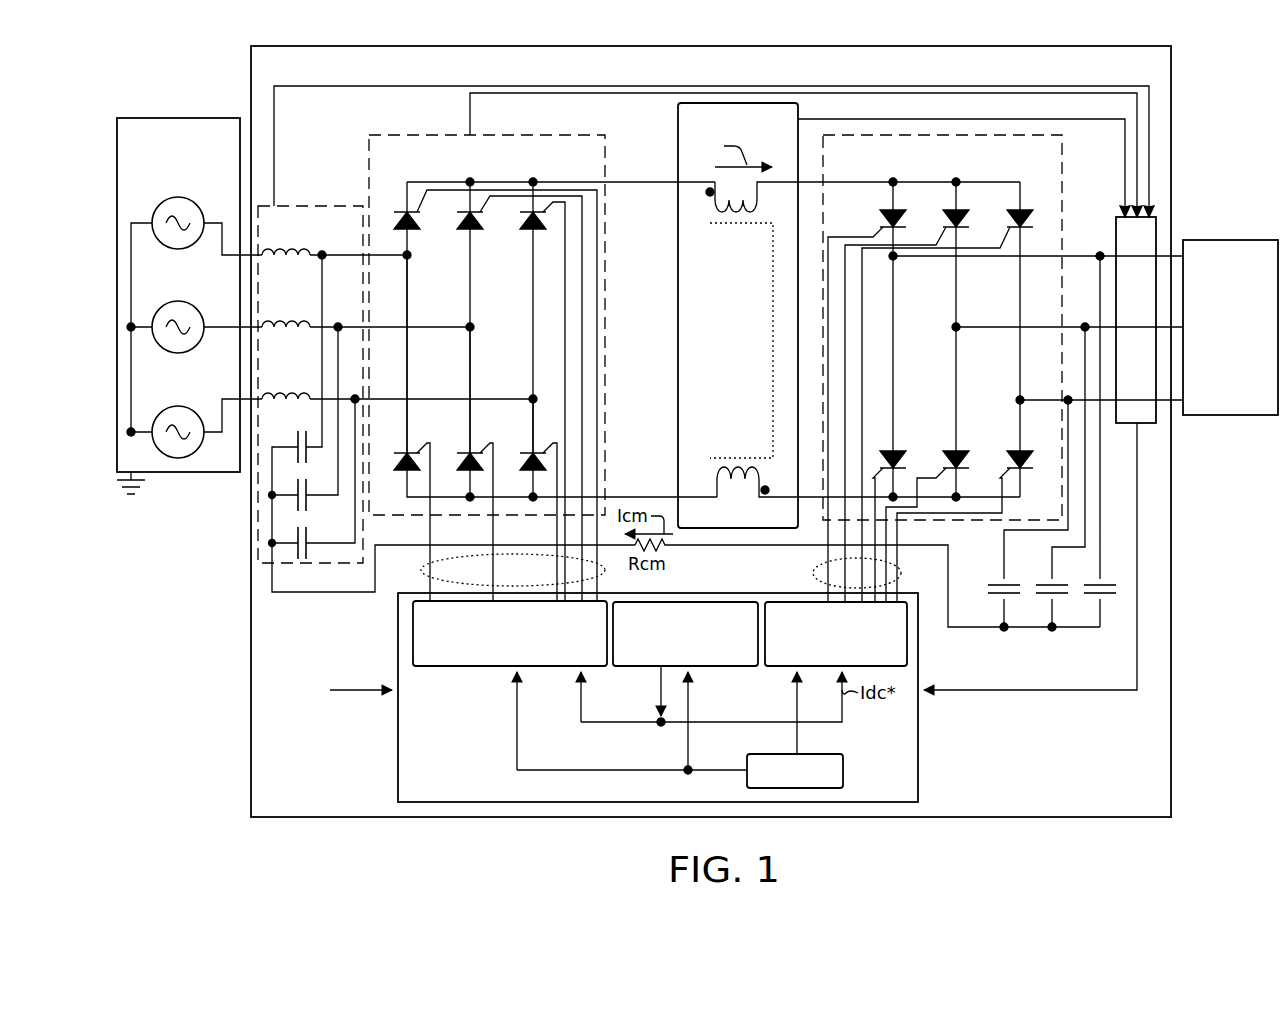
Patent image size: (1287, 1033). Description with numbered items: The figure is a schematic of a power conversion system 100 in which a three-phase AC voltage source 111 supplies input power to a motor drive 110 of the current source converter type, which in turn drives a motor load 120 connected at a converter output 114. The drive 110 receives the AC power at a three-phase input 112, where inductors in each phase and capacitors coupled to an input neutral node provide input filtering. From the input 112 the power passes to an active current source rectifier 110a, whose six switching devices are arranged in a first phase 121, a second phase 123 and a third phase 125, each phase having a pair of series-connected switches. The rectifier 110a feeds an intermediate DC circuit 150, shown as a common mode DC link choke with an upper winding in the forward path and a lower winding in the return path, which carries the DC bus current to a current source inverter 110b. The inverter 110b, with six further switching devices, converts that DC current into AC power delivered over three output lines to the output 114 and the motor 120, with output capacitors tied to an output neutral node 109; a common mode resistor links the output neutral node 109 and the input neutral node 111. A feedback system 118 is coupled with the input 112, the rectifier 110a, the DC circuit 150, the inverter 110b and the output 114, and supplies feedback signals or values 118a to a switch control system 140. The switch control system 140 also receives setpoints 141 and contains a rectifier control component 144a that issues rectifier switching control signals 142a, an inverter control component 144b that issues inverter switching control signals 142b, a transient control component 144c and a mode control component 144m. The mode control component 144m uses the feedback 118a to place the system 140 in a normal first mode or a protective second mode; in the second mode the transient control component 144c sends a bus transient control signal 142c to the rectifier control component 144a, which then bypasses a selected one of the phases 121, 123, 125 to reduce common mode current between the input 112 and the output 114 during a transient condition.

The power conversion system 100 is at (182, 76).
The motor drive 110 is at (251, 68).
The AC voltage source 111 is at (169, 118).
The input rectifier 110a is at (369, 147).
The output inverter 110b is at (1062, 148).
The input 112 is at (298, 206).
The first phase 121 is at (408, 305).
The second phase 123 is at (471, 354).
The third phase 125 is at (533, 399).
The intermediate DC circuit 150 is at (678, 117).
The feedback system 118 is at (1116, 240).
The feedback signals or values 118a is at (1044, 690).
The converter output 114 is at (1230, 314).
The motor load 120 is at (1200, 222).
The output neutral node 109 is at (1070, 648).
The rectifier switching control signals 142a is at (603, 574).
The inverter switching control signals 142b is at (814, 573).
The bus transient control signal 142c is at (661, 691).
The rectifier control component 144a is at (413, 632).
The inverter control component 144b is at (779, 666).
The bus transient control component 144c is at (682, 602).
The mode control component 144m is at (843, 771).
The setpoints 141 is at (353, 678).
The switch control system 140 is at (398, 749).